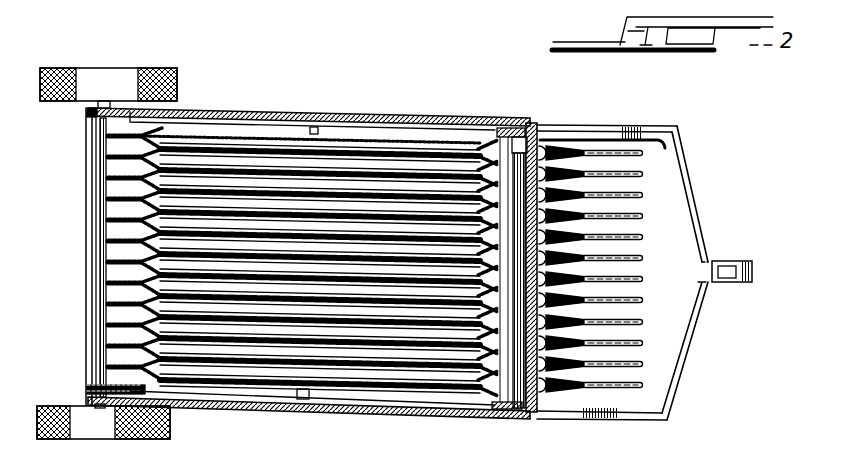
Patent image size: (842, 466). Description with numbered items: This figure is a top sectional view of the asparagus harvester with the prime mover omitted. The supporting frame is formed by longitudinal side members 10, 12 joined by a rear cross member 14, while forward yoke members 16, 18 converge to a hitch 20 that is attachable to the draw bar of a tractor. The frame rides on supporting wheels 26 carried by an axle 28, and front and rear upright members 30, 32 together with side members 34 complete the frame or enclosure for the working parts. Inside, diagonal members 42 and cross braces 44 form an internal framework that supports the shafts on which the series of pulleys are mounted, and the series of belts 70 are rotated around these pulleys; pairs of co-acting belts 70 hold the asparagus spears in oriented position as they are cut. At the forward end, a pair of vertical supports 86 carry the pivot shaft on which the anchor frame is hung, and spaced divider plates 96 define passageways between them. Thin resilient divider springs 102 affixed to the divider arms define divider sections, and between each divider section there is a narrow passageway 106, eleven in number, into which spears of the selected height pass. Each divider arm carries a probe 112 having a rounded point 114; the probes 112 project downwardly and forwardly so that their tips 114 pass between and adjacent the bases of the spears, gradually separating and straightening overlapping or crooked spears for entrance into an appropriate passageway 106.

The longitudinal side member 10 is at (622, 422).
The longitudinal side member 12 is at (598, 127).
The rear cross member 14 is at (86, 240).
The forward yoke member 16 is at (703, 219).
The forward yoke member 18 is at (688, 357).
The hitch 20 is at (722, 284).
The supporting wheel 26 is at (134, 77).
The axle 28 is at (101, 172).
The front upright member 30 is at (536, 124).
The rear upright member 32 is at (90, 112).
The side member 34 is at (322, 118).
The diagonal member 42 is at (420, 116).
The cross brace 44 is at (291, 121).
The belt 70 is at (220, 132).
The vertical support 86 is at (512, 128).
The divider plate 96 is at (552, 392).
The divider spring 102 is at (637, 127).
The passageway 106 is at (605, 166).
The probe 112 is at (625, 204).
The rounded point 114 is at (642, 176).